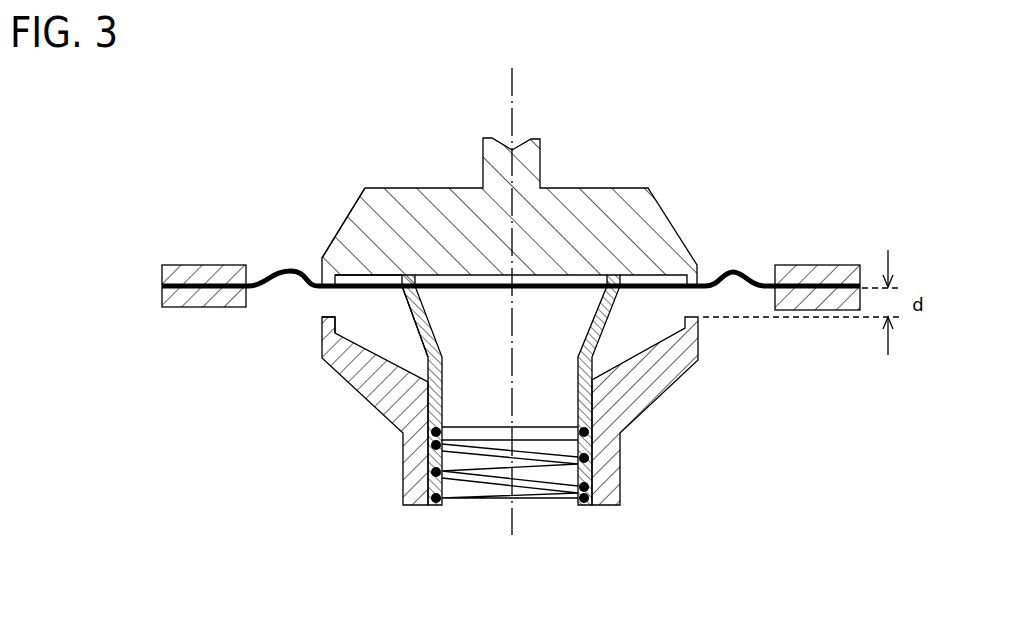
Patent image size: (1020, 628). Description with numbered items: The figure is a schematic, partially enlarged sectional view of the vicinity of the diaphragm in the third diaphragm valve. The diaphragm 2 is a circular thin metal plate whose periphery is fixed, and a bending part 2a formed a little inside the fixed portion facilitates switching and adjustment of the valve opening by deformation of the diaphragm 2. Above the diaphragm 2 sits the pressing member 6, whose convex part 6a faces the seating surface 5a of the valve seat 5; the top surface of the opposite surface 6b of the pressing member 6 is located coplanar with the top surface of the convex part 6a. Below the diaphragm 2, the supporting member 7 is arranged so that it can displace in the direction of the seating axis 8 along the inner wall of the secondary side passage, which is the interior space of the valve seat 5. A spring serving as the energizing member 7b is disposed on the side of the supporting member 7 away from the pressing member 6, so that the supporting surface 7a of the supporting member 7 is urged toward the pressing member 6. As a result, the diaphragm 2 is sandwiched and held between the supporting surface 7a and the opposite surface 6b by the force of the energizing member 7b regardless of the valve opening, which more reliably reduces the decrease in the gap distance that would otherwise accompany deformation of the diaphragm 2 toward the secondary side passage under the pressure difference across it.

The diaphragm 2 is at (555, 289).
The bending part 2a is at (733, 271).
The valve seat 5 is at (620, 405).
The seating surface 5a is at (330, 312).
The pressing member 6 is at (645, 205).
The convex part 6a is at (322, 258).
The opposite surface 6b is at (405, 278).
The supporting member 7 is at (593, 347).
The supporting surface 7a is at (411, 312).
The energizing member 7b is at (467, 503).
The seating axis 8 is at (512, 102).